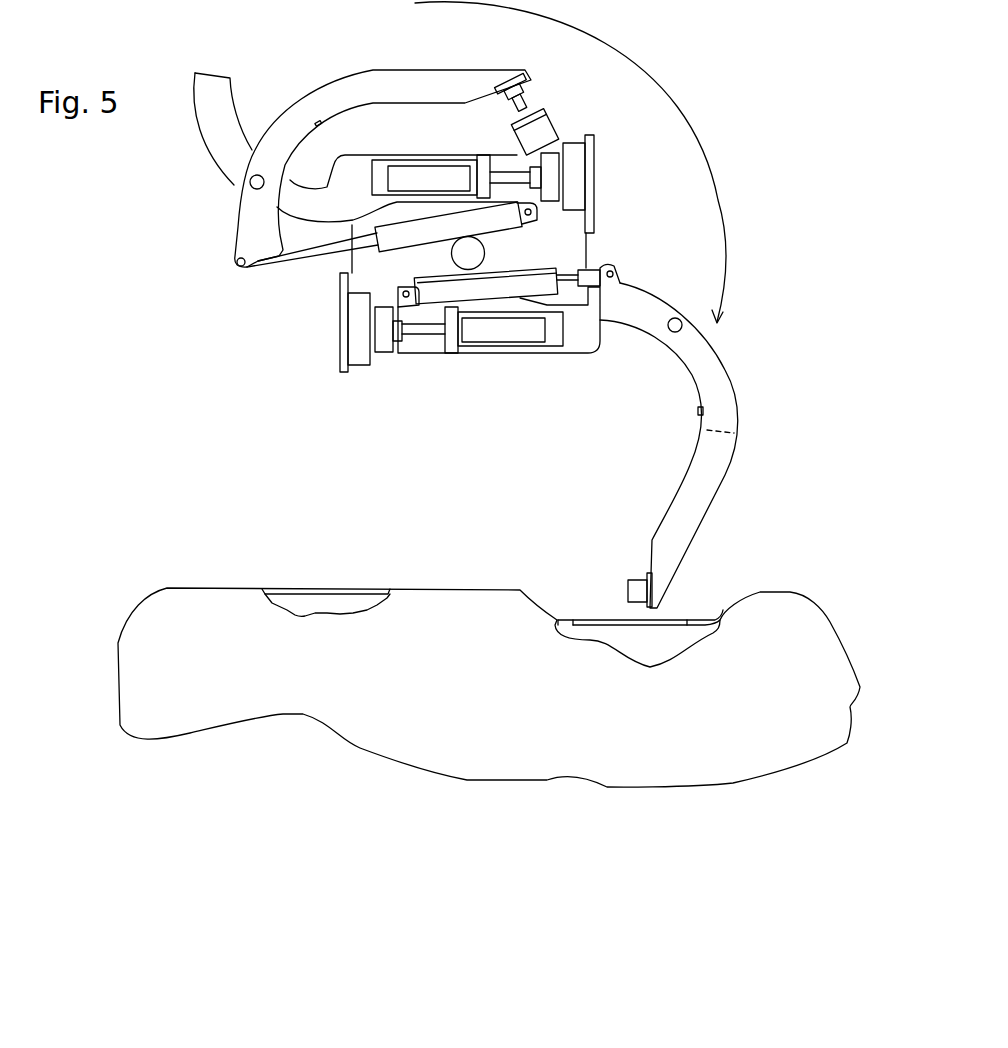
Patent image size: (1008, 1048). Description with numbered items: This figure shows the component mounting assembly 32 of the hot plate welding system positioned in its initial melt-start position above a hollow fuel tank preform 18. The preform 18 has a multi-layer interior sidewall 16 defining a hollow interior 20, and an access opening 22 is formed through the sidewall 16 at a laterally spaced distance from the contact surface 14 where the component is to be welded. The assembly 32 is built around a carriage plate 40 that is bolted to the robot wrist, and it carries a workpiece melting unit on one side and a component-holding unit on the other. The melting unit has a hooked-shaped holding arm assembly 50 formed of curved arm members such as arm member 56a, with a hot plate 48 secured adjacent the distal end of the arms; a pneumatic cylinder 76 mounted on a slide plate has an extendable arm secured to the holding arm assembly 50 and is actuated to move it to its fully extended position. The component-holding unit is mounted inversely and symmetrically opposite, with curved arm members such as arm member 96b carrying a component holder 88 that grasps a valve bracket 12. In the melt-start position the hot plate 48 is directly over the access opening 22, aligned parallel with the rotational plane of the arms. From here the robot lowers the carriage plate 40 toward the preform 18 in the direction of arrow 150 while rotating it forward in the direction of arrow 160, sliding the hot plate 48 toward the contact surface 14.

The curved arm member 96b is at (367, 80).
The component holder 88 is at (526, 83).
The valve bracket 12 is at (524, 110).
The arrow 160 is at (706, 146).
The pneumatic cylinder 76 is at (502, 279).
The carriage plate 40 is at (372, 260).
The component mounting assembly 32 is at (217, 252).
The arrow 150 is at (468, 372).
The holding arm assembly 50 is at (710, 466).
The curved arm member 56a is at (703, 504).
The contact surface 14 is at (285, 592).
The interior sidewall 16 is at (565, 620).
The hot plate 48 is at (628, 587).
The access opening 22 is at (673, 617).
The hollow interior 20 is at (508, 730).
The fuel tank preform 18 is at (430, 778).